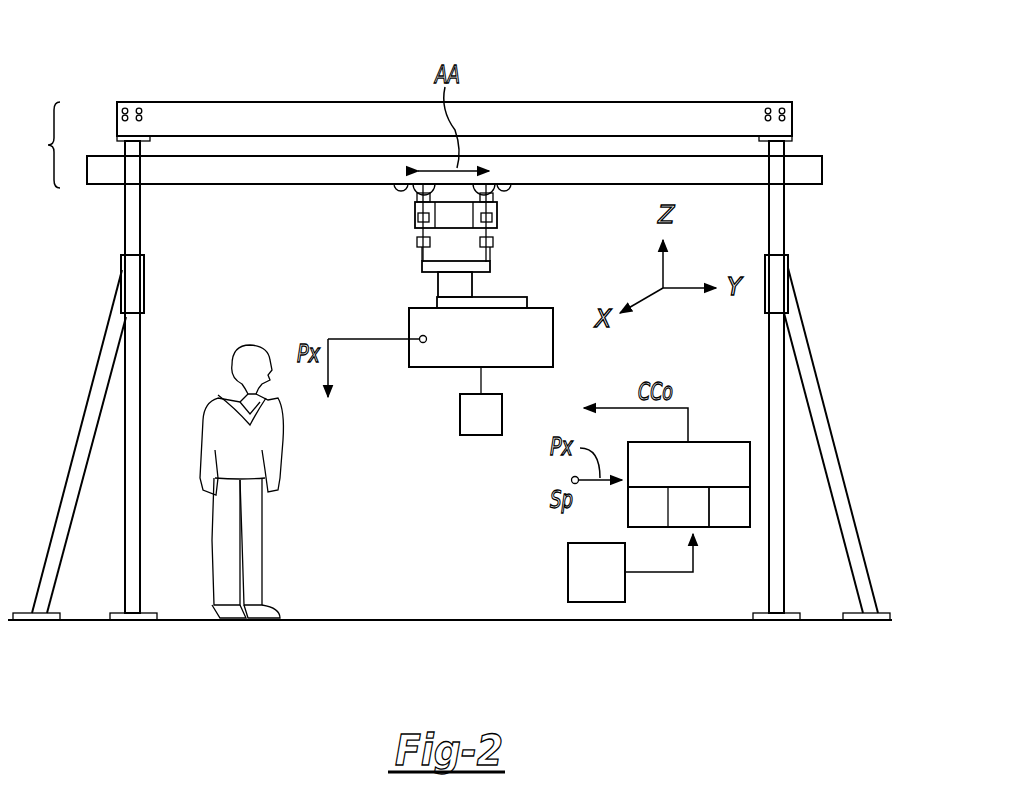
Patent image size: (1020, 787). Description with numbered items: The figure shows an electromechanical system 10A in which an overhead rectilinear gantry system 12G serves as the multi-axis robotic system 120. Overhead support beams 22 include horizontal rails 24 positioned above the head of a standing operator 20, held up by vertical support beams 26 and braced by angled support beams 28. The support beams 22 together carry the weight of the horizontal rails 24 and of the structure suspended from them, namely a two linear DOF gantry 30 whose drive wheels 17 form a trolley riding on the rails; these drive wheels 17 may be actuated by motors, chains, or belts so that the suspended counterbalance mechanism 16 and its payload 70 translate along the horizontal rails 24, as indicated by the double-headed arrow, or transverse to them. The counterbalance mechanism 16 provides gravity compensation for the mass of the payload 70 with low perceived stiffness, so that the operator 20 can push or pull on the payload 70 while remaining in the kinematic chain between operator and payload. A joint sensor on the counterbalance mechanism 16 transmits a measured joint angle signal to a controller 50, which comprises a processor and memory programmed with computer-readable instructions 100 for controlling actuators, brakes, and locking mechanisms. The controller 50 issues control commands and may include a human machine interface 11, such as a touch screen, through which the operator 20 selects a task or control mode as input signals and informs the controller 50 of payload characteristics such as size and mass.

The electromechanical system 10A is at (780, 47).
The overhead rectilinear gantry system 12G is at (541, 47).
The multi-axis robotic system 120 is at (190, 72).
The overhead support beams 22 is at (41, 145).
The horizontal rails 24 is at (823, 170).
The vertical support beams 26 is at (140, 218).
The angled support beams 28 is at (73, 438).
The drive wheels 17 is at (388, 195).
The two linear DOF gantry 30 is at (506, 246).
The counterbalance mechanism 16 is at (496, 352).
The payload 70 is at (481, 401).
The operator 20 is at (235, 337).
The controller 50 is at (701, 476).
The computer-readable instructions 100 is at (744, 523).
The human machine interface 11 is at (568, 573).